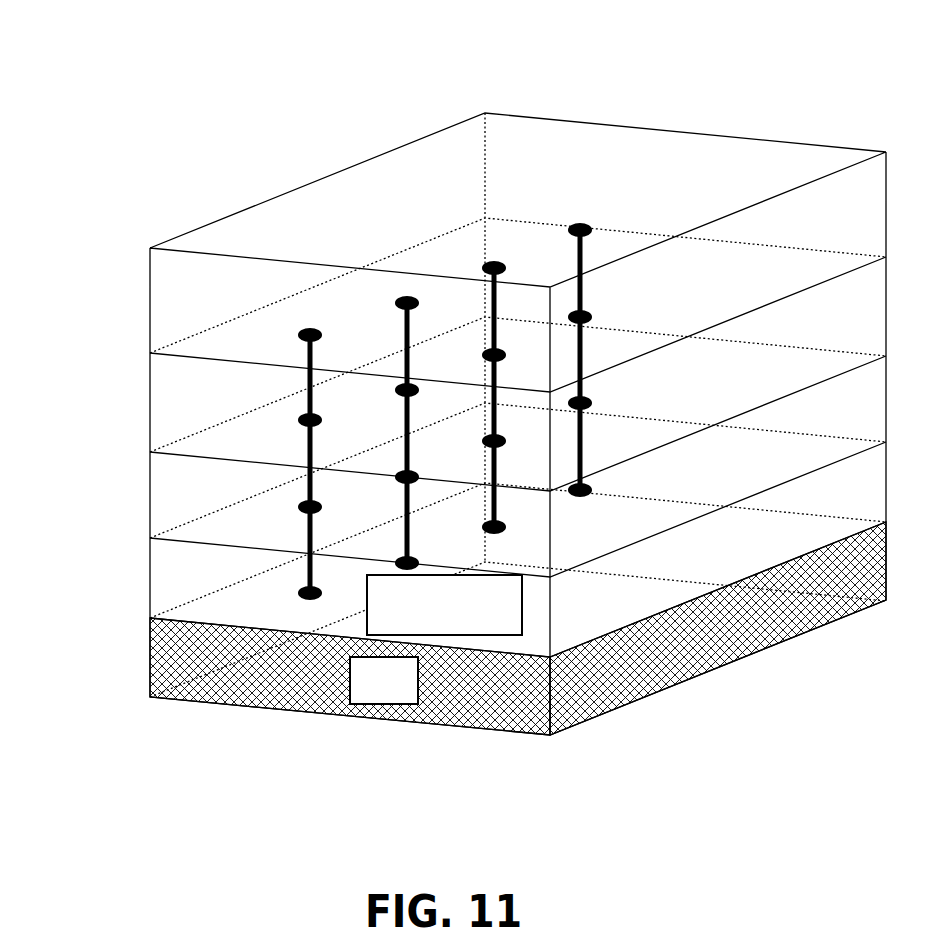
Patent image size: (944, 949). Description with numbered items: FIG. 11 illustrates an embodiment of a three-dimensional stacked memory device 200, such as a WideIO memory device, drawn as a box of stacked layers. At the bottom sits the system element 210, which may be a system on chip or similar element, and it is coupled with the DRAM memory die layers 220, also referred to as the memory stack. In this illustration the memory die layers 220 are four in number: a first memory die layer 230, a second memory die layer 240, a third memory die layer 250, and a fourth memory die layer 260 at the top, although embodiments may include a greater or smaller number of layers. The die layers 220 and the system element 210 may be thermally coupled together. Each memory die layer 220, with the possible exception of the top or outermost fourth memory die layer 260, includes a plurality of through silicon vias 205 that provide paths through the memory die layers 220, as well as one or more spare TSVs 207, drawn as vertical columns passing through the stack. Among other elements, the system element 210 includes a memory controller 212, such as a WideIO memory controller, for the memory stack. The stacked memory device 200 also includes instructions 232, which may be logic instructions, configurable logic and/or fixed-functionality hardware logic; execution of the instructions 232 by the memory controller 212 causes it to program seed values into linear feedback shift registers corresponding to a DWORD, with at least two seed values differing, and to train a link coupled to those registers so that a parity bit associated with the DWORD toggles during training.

The 3D-stacked memory device 200 is at (124, 79).
The through silicon vias 205 is at (310, 333).
The spare TSVs 207 is at (580, 228).
The system element 210 is at (213, 684).
The memory controller 212 is at (390, 705).
The DRAM memory die layers 220 is at (127, 250).
The first memory die layer 230 is at (518, 589).
The instructions 232 is at (523, 605).
The second memory die layer 240 is at (518, 509).
The third memory die layer 250 is at (518, 423).
The fourth memory die layer 260 is at (518, 324).